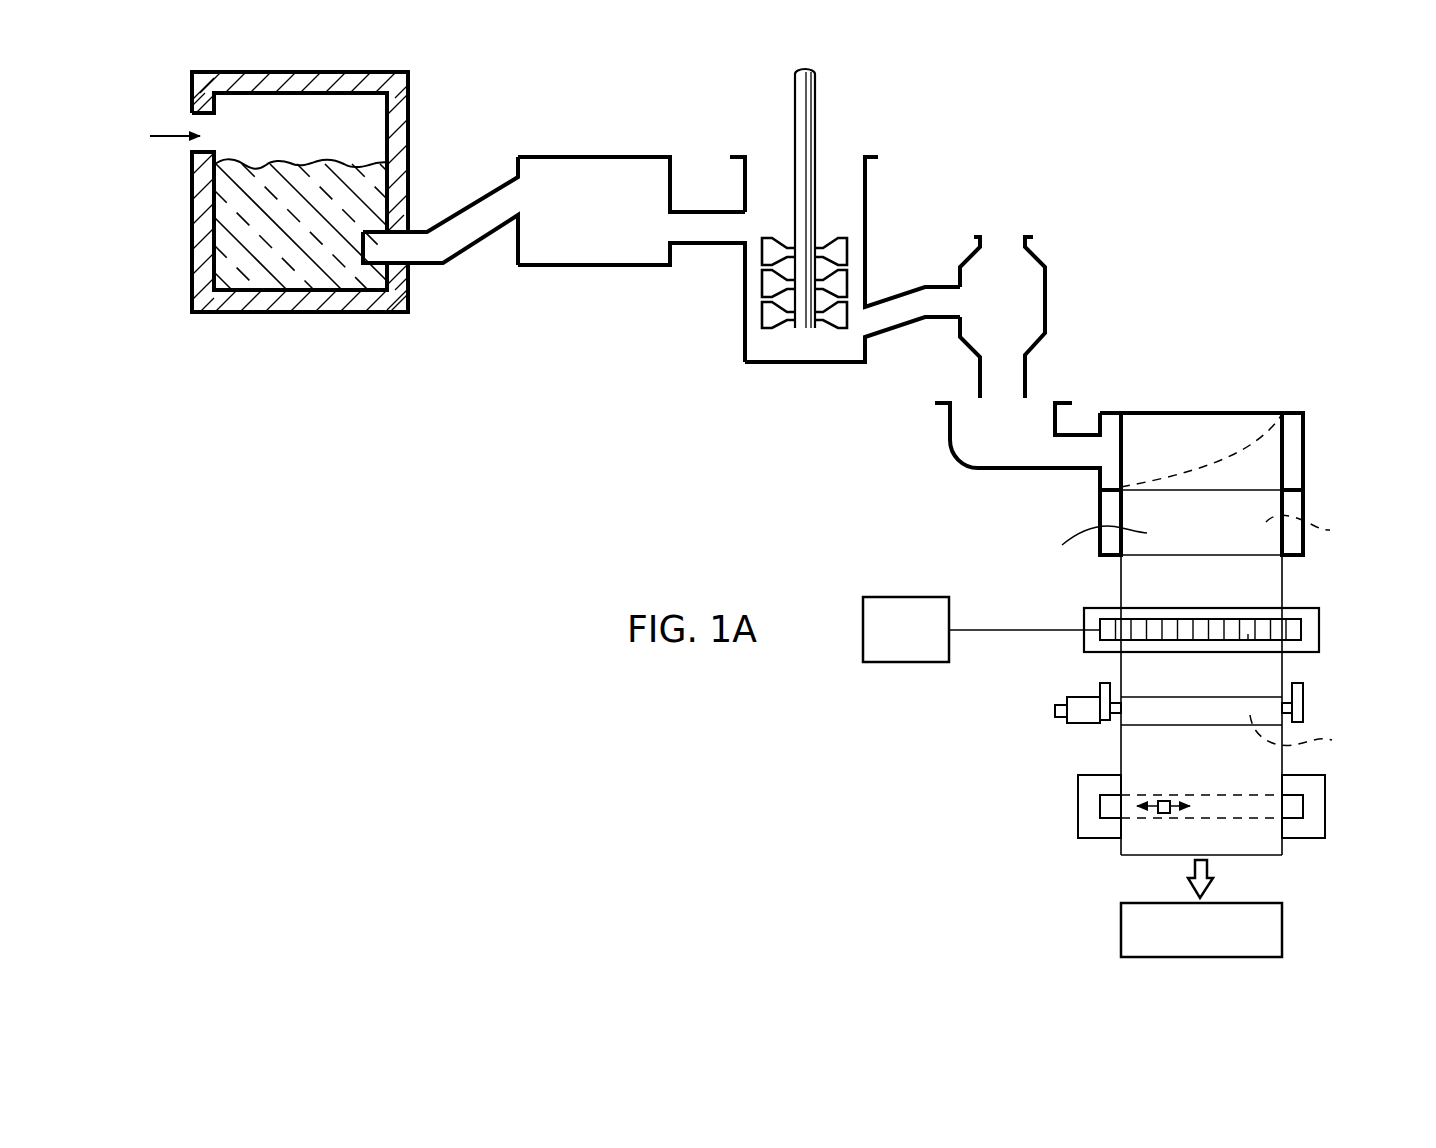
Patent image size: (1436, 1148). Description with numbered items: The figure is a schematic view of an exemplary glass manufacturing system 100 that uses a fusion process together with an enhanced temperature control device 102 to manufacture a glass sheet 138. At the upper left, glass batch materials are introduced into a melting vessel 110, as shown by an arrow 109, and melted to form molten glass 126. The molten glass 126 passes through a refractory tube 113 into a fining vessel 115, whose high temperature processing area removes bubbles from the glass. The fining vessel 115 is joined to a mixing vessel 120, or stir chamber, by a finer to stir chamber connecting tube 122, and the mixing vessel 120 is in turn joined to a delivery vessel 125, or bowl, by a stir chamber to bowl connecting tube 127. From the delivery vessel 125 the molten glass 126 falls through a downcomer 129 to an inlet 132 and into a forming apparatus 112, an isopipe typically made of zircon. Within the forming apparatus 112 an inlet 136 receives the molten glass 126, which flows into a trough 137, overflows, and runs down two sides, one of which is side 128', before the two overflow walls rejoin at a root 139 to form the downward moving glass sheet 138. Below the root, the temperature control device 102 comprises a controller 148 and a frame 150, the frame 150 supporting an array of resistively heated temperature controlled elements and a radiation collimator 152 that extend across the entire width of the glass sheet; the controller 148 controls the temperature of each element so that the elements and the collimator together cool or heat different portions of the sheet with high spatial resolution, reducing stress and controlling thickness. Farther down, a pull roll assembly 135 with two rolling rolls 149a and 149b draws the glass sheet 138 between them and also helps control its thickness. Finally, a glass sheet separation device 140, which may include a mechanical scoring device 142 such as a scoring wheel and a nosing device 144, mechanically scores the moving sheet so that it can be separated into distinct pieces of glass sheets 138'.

The glass manufacturing system 100 is at (1197, 190).
The arrow 109 is at (170, 136).
The melting vessel 110 is at (268, 318).
The molten glass 126 is at (292, 162).
The refractory tube 113 is at (466, 194).
The fining vessel 115 is at (585, 155).
The finer to stir chamber connecting tube 122 is at (718, 209).
The mixing vessel 120 is at (866, 196).
The stir chamber to bowl connecting tube 127 is at (940, 320).
The delivery vessel 125 is at (1047, 284).
The downcomer 129 is at (1027, 370).
The inlet 132 is at (946, 428).
The forming apparatus 112 is at (1309, 455).
The inlet 136 is at (1100, 480).
The trough 137 is at (1204, 420).
The side 128' is at (1082, 543).
The root 139 is at (1263, 556).
The glass sheet 138 is at (1206, 655).
The frame 150 is at (1320, 636).
The radiation collimator 152 is at (1248, 641).
The controller 148 is at (905, 664).
The temperature control device 102 is at (1080, 642).
The rolling roll 149a is at (1153, 715).
The pull roll assembly 135 is at (1308, 711).
The rolling roll 149b is at (1320, 740).
The glass sheet separation device 140 is at (1076, 818).
The nosing device 144 is at (1110, 795).
The mechanical scoring device 142 is at (1165, 817).
The glass sheets 138' is at (1238, 930).